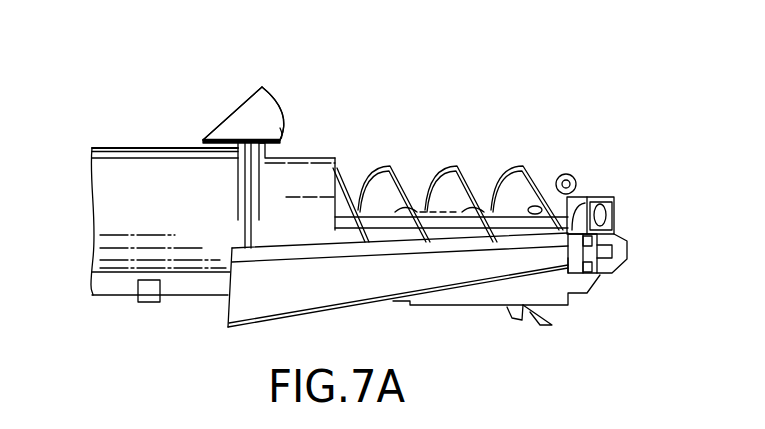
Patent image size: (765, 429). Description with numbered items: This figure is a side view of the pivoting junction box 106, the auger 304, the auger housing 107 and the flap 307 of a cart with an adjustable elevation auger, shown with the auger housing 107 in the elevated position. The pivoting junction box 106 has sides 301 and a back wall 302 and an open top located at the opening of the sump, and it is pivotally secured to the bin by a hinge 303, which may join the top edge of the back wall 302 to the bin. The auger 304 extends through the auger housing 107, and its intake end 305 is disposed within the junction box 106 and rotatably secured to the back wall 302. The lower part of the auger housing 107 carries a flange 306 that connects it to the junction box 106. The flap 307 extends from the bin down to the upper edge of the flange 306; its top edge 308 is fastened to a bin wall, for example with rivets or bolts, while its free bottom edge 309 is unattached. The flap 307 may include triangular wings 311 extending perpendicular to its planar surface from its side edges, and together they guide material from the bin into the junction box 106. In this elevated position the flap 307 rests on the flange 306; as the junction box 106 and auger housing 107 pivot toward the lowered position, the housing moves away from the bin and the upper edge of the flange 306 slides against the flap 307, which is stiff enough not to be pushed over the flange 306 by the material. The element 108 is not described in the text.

The pivoting junction box 106 is at (472, 305).
The auger housing 107 is at (112, 297).
The top rail 108 is at (112, 149).
The sides 301 is at (558, 293).
The back wall 302 is at (597, 283).
The hinge 303 is at (577, 180).
The auger 304 is at (483, 168).
The intake end 305 is at (413, 178).
The flange 306 is at (242, 192).
The flap 307 is at (258, 110).
The top edge 308 is at (203, 136).
The free bottom edge 309 is at (282, 134).
The wings 311 is at (277, 105).